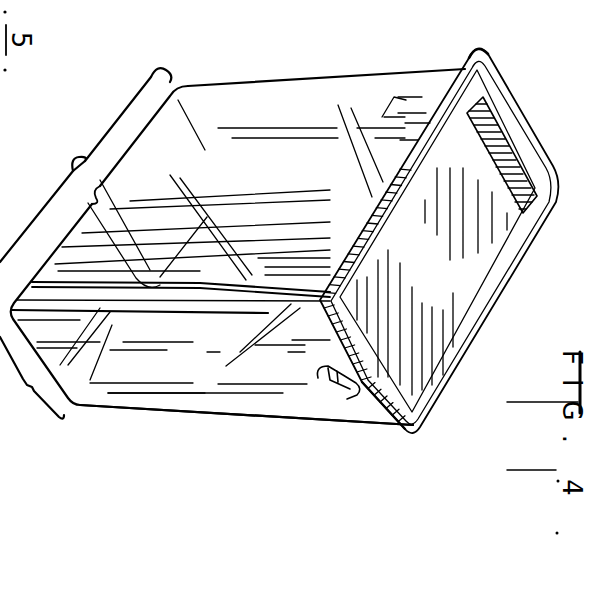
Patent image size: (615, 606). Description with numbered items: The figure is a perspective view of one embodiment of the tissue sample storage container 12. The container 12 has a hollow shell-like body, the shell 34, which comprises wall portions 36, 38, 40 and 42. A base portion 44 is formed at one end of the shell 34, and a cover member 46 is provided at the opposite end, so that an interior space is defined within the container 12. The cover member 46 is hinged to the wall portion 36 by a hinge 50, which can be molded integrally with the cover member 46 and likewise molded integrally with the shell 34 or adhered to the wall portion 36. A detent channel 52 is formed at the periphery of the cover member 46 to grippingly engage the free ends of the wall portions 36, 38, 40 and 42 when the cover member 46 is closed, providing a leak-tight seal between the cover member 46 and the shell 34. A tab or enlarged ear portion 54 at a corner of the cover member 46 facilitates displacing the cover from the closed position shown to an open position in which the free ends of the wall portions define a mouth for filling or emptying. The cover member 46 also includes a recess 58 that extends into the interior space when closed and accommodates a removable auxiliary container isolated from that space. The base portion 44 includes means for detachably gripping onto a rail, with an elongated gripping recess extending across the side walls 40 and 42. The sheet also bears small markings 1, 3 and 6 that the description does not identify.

The marking 1 is at (14, 417).
The marking 3 is at (47, 148).
The hinge knuckle 6 is at (90, 192).
The container 12 is at (451, 418).
The shell 34 is at (218, 417).
The wall portion 36 is at (140, 387).
The wall portion 38 is at (353, 93).
The wall portion 40 is at (246, 88).
The wall portion 42 is at (283, 396).
The base portion 44 is at (167, 143).
The cover member 46 is at (472, 285).
The hinge 50 is at (363, 392).
The detent channel 52 is at (541, 228).
The ear portion 54 is at (476, 52).
The recess 58 is at (504, 141).